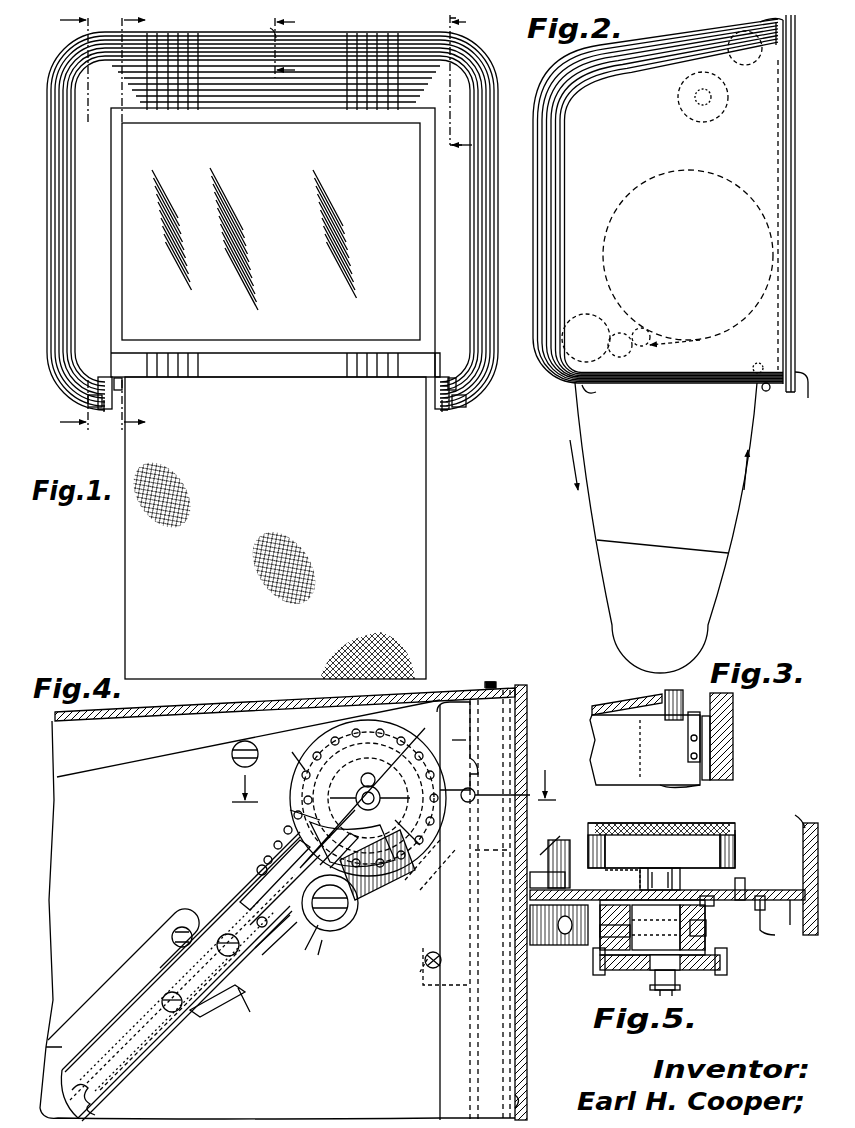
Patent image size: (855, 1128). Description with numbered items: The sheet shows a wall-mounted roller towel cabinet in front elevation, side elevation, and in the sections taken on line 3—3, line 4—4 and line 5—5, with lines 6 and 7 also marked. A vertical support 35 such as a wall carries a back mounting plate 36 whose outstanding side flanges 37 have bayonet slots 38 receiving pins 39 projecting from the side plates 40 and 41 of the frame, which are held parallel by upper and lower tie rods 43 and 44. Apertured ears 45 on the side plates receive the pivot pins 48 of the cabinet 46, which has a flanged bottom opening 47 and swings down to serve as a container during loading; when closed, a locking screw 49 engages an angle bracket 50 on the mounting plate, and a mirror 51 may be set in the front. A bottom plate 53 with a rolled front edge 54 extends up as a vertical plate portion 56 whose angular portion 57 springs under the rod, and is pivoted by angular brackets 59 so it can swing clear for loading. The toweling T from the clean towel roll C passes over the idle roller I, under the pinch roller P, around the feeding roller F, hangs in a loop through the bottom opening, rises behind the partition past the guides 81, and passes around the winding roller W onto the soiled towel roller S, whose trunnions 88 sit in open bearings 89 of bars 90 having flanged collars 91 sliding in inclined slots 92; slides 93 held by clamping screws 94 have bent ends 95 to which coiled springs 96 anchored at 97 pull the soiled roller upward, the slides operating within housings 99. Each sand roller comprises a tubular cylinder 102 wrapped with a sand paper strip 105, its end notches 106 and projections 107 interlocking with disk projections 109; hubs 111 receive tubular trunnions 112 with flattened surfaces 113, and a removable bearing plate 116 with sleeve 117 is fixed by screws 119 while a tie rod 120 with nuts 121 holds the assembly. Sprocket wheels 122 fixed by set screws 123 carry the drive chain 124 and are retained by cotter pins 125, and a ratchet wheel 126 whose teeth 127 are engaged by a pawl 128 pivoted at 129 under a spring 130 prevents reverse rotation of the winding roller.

In FIG. 1, the section line 3— 3 is at (292, 46).
In FIG. 1, the section line 4— 4 is at (464, 91).
In FIG. 4, the section line 5— 5 is at (397, 786).
In FIG. 1, the section line 6 is at (66, 223).
In FIG. 1, the section line 7 is at (141, 223).
In FIG. 2, the vertical support 35 is at (788, 395).
In FIG. 3, the vertical support 35 is at (734, 722).
In FIG. 4, the vertical support 35 is at (527, 706).
In FIG. 5, the vertical support 35 is at (814, 822).
In FIG. 2, the back mounting plate 36 is at (798, 392).
In FIG. 3, the back mounting plate 36 is at (733, 750).
In FIG. 4, the back mounting plate 36 is at (515, 1102).
In FIG. 5, the back mounting plate 36 is at (792, 817).
In FIG. 3, the side flanges 37 is at (700, 784).
In FIG. 4, the side flanges 37 is at (490, 735).
In FIG. 5, the side flanges 37 is at (790, 905).
In FIG. 4, the bayonet slots 38 is at (478, 778).
In FIG. 5, the bayonet slots 38 is at (776, 935).
In FIG. 4, the pins 39 is at (476, 798).
In FIG. 5, the pins 39 is at (770, 935).
In FIG. 1, the side plate 40 is at (102, 378).
In FIG. 3, the side plate 40 is at (610, 782).
In FIG. 1, the side plate 41 is at (447, 378).
In FIG. 2, the side plate 41 is at (685, 386).
In FIG. 4, the side plate 41 is at (277, 909).
In FIG. 5, the side plate 41 is at (772, 886).
In FIG. 4, the upper tie rod 43 is at (228, 762).
In FIG. 2, the lower tie rod 44 is at (752, 366).
In FIG. 4, the lower tie rod 44 is at (428, 985).
In FIG. 1, the apertured ears 45 is at (95, 408).
In FIG. 2, the apertured ears 45 is at (720, 388).
In FIG. 1, the cabinet 46 is at (90, 372).
In FIG. 2, the cabinet 46 is at (658, 201).
In FIG. 3, the cabinet 46 is at (612, 706).
In FIG. 4, the cabinet 46 is at (468, 688).
In FIG. 1, the bottom opening 47 is at (297, 378).
In FIG. 2, the bottom opening 47 is at (560, 385).
In FIG. 1, the pivot pins 48 is at (106, 413).
In FIG. 2, the pivot pins 48 is at (762, 392).
In FIG. 1, the locking screw 49 is at (272, 30).
In FIG. 2, the locking screw 49 is at (760, 15).
In FIG. 3, the locking screw 49 is at (670, 692).
In FIG. 4, the locking screw 49 is at (492, 680).
In FIG. 3, the angle bracket 50 is at (688, 752).
In FIG. 4, the angle bracket 50 is at (505, 688).
In FIG. 1, the mirror 51 is at (271, 231).
In FIG. 2, the bottom plate 53 is at (655, 388).
In FIG. 1, the rolled front edge 54 is at (122, 384).
In FIG. 2, the rolled front edge 54 is at (594, 394).
In FIG. 4, the vertical plate portion 56 is at (466, 1078).
In FIG. 4, the angular portion 57 is at (420, 975).
In FIG. 1, the angular brackets 59 is at (108, 380).
In FIG. 4, the guides 81 is at (412, 932).
In FIG. 4, the trunnions 88 is at (278, 930).
In FIG. 5, the trunnions 88 is at (564, 849).
In FIG. 4, the open bearings 89 is at (268, 882).
In FIG. 5, the open bearings 89 is at (568, 880).
In FIG. 4, the bearing bars 90 is at (266, 928).
In FIG. 4, the flanged collars 91 is at (206, 902).
In FIG. 4, the inclined slots 92 is at (285, 865).
In FIG. 4, the slides 93 is at (160, 1030).
In FIG. 4, the clamping screws 94 is at (240, 958).
In FIG. 4, the bent ends 95 is at (96, 1115).
In FIG. 4, the coiled spring 96 is at (258, 866).
In FIG. 5, the coiled spring 96 is at (566, 945).
In FIG. 4, the spring anchor 97 is at (300, 842).
In FIG. 4, the housing 99 is at (165, 974).
In FIG. 5, the housing 99 is at (560, 957).
In FIG. 5, the tubular cylinder 102 is at (661, 845).
In FIG. 5, the sand paper strip 105 is at (722, 822).
In FIG. 5, the segmental notches 106 is at (737, 848).
In FIG. 5, the projections 107 is at (702, 860).
In FIG. 5, the disk projections 109 is at (645, 818).
In FIG. 5, the hubs 111 is at (666, 879).
In FIG. 5, the tubular trunnions 112 is at (678, 968).
In FIG. 5, the flattened surfaces 113 is at (678, 978).
In FIG. 5, the bearing plate 116 is at (742, 878).
In FIG. 5, the sleeve 117 is at (708, 894).
In FIG. 5, the screws 119 is at (760, 894).
In FIG. 4, the tie rod 120 is at (473, 905).
In FIG. 5, the tie rod 120 is at (660, 990).
In FIG. 4, the nuts 121 is at (382, 740).
In FIG. 5, the nuts 121 is at (650, 975).
In FIG. 4, the sprocket wheel 122 is at (322, 748).
In FIG. 5, the sprocket wheel 122 is at (650, 968).
In FIG. 4, the set screw 123 is at (361, 778).
In FIG. 5, the set screw 123 is at (632, 942).
In FIG. 4, the drive chain 124 is at (296, 760).
In FIG. 5, the drive chain 124 is at (727, 975).
In FIG. 4, the spring cotter pins 125 is at (364, 798).
In FIG. 4, the ratchet wheel 126 is at (352, 842).
In FIG. 5, the ratchet wheel 126 is at (706, 926).
In FIG. 4, the ratchet teeth 127 is at (288, 808).
In FIG. 5, the ratchet teeth 127 is at (708, 940).
In FIG. 4, the pawl 128 is at (400, 882).
In FIG. 5, the pawl 128 is at (708, 916).
In FIG. 4, the pawl pivot 129 is at (338, 934).
In FIG. 4, the spring 130 is at (345, 920).
In FIG. 5, the spring 130 is at (625, 879).
In FIG. 1, the toweling T is at (428, 572).
In FIG. 2, the toweling T is at (663, 528).
In FIG. 2, the soiled towel roller S is at (675, 95).
In FIG. 2, the clean towel roll C is at (625, 190).
In FIG. 2, the winding roller W is at (724, 47).
In FIG. 2, the feeding roller F is at (590, 315).
In FIG. 2, the pinch roller P is at (629, 336).
In FIG. 2, the idle roller I is at (675, 351).